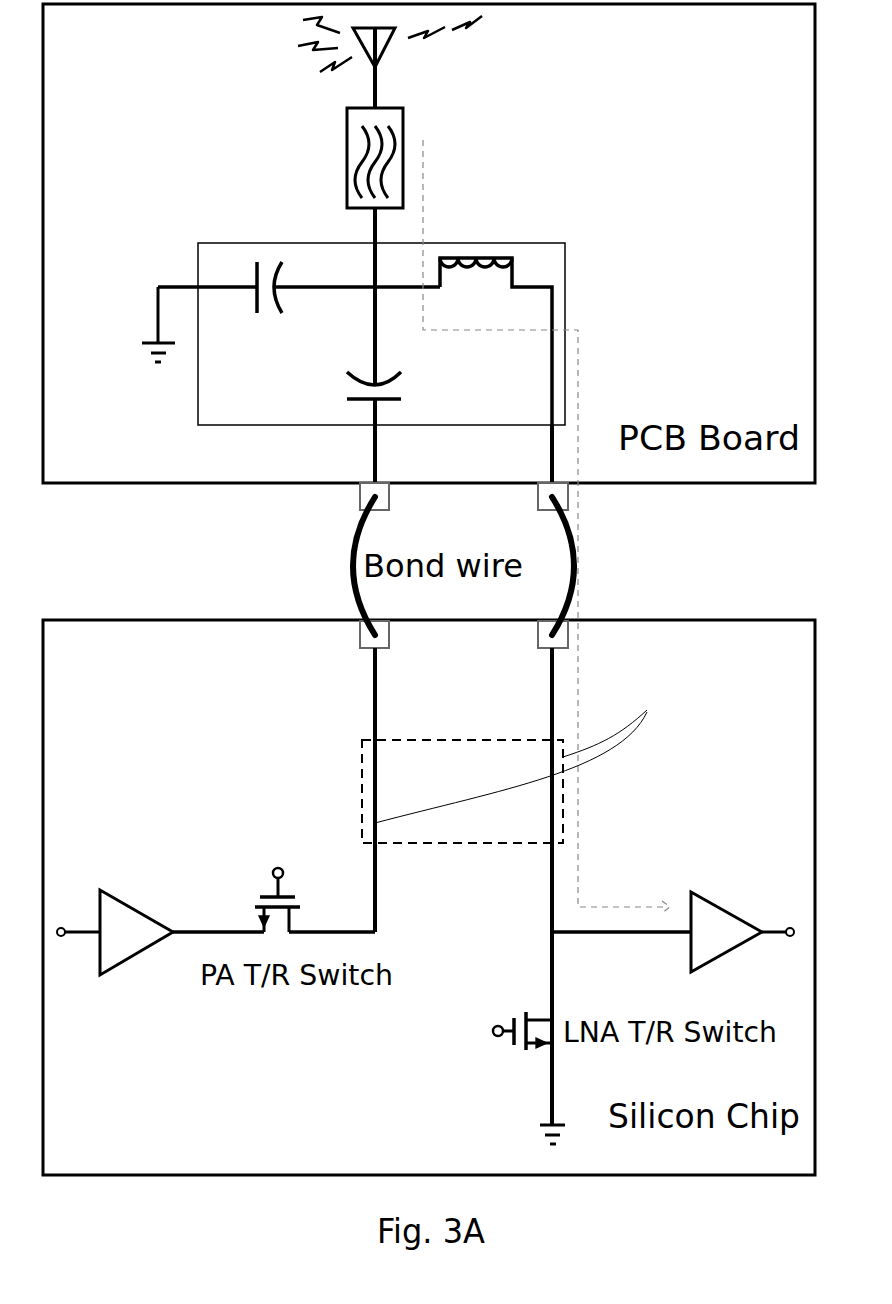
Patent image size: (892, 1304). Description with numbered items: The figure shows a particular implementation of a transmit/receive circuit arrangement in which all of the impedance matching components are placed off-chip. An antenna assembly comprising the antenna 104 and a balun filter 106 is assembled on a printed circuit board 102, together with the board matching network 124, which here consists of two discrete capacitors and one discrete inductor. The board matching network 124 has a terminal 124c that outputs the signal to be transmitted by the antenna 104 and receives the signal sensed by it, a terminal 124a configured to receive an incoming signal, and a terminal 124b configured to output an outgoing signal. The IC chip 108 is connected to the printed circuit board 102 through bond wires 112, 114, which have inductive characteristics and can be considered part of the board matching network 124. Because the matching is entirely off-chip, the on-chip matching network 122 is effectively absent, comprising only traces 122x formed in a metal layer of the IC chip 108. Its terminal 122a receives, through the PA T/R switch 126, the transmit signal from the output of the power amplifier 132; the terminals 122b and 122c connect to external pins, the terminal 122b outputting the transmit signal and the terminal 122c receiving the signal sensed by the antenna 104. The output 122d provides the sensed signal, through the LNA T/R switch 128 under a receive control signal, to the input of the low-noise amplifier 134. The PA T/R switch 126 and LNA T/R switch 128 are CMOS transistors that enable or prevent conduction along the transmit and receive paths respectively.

The printed circuit board 102 is at (758, 60).
The antenna 104 is at (388, 50).
The balun filter 106 is at (403, 115).
The IC chip 108 is at (127, 685).
The bond wire 112 is at (365, 530).
The bond wire 114 is at (532, 594).
The on-chip matching network 122 is at (358, 766).
The terminal 122a is at (378, 882).
The terminal 122b is at (378, 662).
The terminal 122c is at (550, 680).
The output 122d is at (550, 912).
The traces 122x is at (530, 753).
The board matching network 124 is at (565, 272).
The terminal 124a is at (378, 466).
The terminal 124b is at (550, 445).
The terminal 124c is at (372, 237).
The PA T/R switch 126 is at (250, 878).
The LNA T/R switch 128 is at (505, 1070).
The power amplifier 132 is at (120, 965).
The low-noise amplifier 134 is at (735, 912).